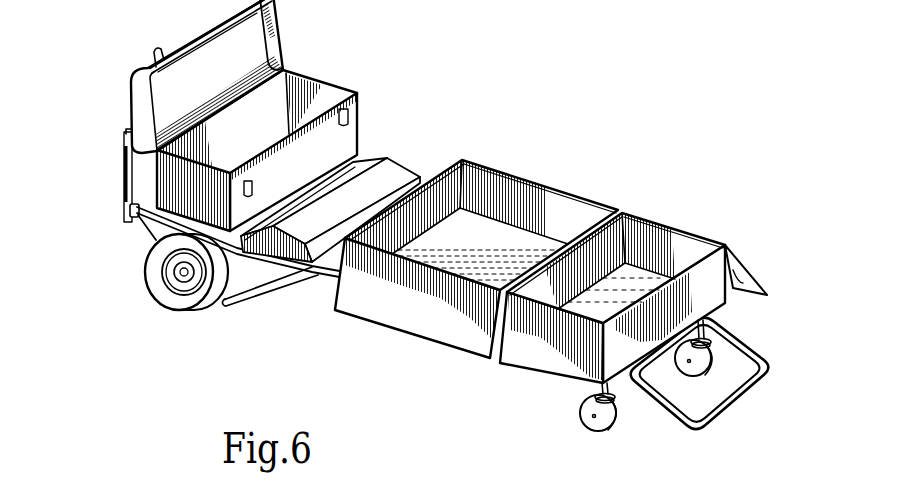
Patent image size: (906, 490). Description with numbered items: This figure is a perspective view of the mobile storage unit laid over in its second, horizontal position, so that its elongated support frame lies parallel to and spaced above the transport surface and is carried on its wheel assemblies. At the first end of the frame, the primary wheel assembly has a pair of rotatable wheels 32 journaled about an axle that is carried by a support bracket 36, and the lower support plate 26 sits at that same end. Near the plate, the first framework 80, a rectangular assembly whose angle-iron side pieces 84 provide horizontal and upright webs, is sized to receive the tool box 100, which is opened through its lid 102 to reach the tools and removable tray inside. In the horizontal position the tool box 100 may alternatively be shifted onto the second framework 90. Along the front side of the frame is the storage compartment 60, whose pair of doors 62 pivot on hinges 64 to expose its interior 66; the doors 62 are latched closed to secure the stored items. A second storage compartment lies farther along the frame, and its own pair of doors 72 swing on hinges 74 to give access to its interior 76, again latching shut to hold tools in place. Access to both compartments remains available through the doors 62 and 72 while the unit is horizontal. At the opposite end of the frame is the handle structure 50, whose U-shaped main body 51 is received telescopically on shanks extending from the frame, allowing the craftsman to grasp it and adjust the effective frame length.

The lid 102 is at (254, 34).
The tool box 100 is at (347, 138).
The first framework 80 is at (133, 132).
The side pieces 84 is at (128, 163).
The lower support plate 26 is at (132, 211).
The second framework 90 is at (180, 227).
The rotatable wheels 32 is at (205, 312).
The support bracket 36 is at (252, 302).
The hinges 74 is at (400, 280).
The interior 76 is at (472, 225).
The doors 72 is at (448, 333).
The hinges 64 is at (545, 323).
The interior 66 is at (650, 272).
The doors 62 is at (738, 270).
The storage compartment 60 is at (708, 297).
The handle structure 50 is at (768, 352).
The U-shaped main body 51 is at (742, 402).